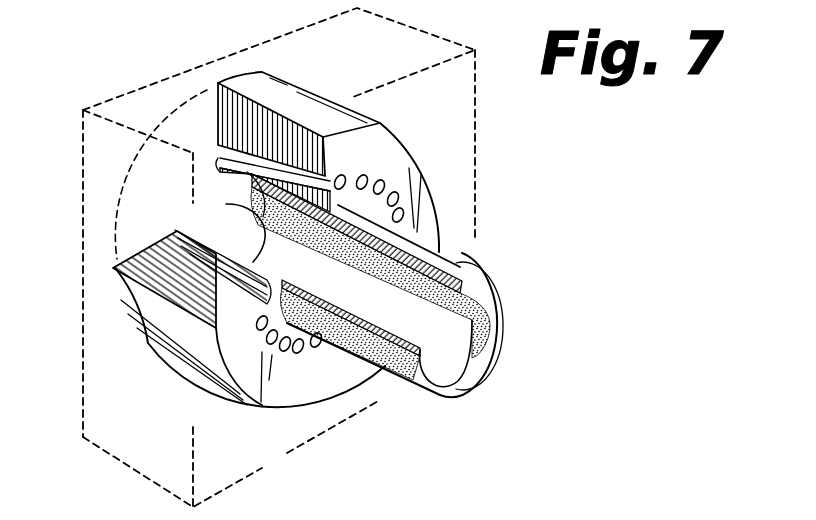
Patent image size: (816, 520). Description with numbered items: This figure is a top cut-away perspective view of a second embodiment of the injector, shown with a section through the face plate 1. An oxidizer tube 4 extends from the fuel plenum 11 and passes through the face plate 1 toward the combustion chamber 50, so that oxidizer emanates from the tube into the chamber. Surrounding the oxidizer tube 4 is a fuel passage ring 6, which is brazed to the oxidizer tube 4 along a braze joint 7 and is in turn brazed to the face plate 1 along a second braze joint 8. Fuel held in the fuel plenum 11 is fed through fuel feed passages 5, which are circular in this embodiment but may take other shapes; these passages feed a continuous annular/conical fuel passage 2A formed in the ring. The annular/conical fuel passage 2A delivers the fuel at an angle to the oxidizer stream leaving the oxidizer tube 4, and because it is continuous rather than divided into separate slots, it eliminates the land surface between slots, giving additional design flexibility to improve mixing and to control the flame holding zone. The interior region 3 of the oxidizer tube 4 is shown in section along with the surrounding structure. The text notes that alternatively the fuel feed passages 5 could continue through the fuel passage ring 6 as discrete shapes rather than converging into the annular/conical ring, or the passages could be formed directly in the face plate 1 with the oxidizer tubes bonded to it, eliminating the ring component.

The face plate 1 is at (117, 458).
The fuel plenum 11 is at (314, 501).
The combustion chamber 50 is at (246, 30).
The fuel passage ring 6 is at (280, 398).
The braze joint 8 is at (191, 372).
The continuous annular/conical fuel passage 2A is at (257, 150).
The braze joint 7 is at (228, 204).
The oxidizer tube 4 is at (462, 272).
The filler 3 is at (450, 355).
The fuel feed passages 5 is at (414, 178).